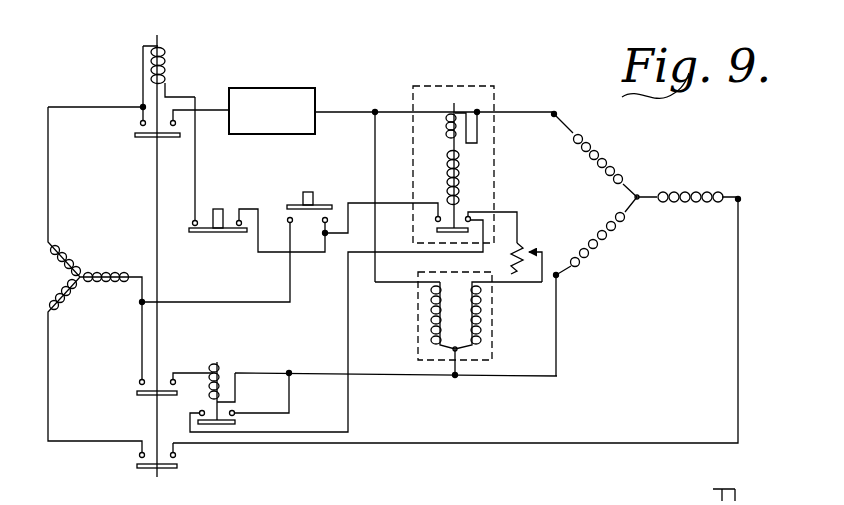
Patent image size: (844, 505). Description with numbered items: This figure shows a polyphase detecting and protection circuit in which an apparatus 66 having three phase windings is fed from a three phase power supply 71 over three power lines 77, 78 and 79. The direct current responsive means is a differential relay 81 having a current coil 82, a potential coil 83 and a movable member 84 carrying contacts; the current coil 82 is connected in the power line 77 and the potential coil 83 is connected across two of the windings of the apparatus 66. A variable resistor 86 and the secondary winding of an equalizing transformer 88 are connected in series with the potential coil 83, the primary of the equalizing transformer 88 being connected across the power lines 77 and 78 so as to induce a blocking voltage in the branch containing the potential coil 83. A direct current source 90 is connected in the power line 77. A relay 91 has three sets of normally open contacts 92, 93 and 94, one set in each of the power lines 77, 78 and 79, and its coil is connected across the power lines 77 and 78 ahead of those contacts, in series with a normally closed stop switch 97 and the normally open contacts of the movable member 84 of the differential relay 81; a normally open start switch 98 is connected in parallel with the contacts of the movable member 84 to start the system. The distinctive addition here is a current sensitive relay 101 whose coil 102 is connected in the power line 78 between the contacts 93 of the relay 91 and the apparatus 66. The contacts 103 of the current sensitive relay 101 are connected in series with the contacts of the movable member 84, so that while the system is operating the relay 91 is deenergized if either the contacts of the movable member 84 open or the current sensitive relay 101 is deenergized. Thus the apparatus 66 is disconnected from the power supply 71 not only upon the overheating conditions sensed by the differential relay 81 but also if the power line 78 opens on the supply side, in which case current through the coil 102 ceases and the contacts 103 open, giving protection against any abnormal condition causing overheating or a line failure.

The apparatus 66 is at (648, 170).
The three phase power supply 71 is at (87, 294).
The power line 77 is at (340, 109).
The power line 78 is at (320, 372).
The power line 79 is at (410, 443).
The differential relay 81 is at (461, 143).
The current coil 82 is at (448, 118).
The potential coil 83 is at (459, 180).
The movable member 84 is at (437, 232).
The variable resistor 86 is at (523, 247).
The equalizing transformer 88 is at (492, 357).
The direct current source 90 is at (288, 88).
The relay 91 is at (176, 62).
The set of normally open contacts 92 is at (140, 140).
The set of normally open contacts 93 is at (140, 396).
The set of normally open contacts 94 is at (158, 470).
The stop switch 97 is at (231, 238).
The start switch 98 is at (283, 198).
The current sensitive relay 101 is at (228, 405).
The coil 102 is at (212, 382).
The contacts 103 is at (228, 426).